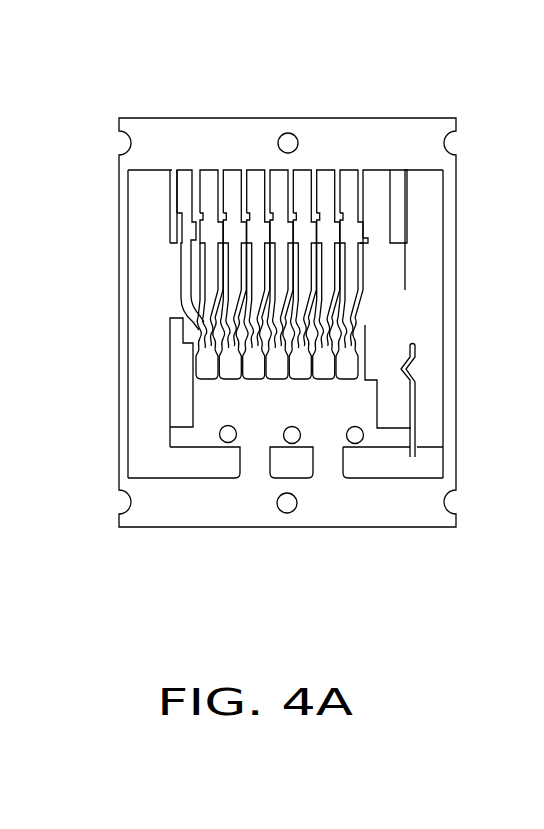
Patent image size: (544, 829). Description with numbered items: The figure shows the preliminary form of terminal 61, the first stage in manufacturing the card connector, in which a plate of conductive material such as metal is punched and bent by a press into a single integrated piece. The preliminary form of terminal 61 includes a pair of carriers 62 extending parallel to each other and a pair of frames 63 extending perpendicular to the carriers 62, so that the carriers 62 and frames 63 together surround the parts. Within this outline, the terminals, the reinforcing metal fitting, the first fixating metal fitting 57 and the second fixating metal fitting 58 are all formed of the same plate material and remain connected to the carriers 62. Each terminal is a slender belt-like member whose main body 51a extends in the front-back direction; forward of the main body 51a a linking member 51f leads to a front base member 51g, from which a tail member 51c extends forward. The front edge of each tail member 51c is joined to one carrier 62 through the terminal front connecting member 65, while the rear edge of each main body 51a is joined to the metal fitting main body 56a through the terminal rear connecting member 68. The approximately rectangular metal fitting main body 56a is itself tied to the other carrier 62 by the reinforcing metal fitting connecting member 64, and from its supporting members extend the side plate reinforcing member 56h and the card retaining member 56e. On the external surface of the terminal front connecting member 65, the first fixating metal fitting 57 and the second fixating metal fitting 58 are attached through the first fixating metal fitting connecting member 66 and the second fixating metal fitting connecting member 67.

The preliminary form of terminal 61 is at (355, 119).
The carrier 62 is at (209, 135).
The frame 63 is at (117, 384).
The reinforcing metal fitting connecting member 64 is at (330, 465).
The terminal front connecting member 65 is at (198, 193).
The first fixating metal fitting connecting member 66 is at (171, 192).
The second fixating metal fitting connecting member 67 is at (405, 183).
The terminal rear connecting member 68 is at (364, 366).
The first fixating metal fitting 57 is at (171, 239).
The second fixating metal fitting 58 is at (403, 240).
The main body 51a is at (364, 360).
The tail member 51c is at (380, 210).
The linking member 51f is at (182, 277).
The front base member 51g is at (363, 244).
The metal fitting main body 56a is at (357, 410).
The card retaining member 56e is at (410, 400).
The side plate reinforcing member 56h is at (168, 410).